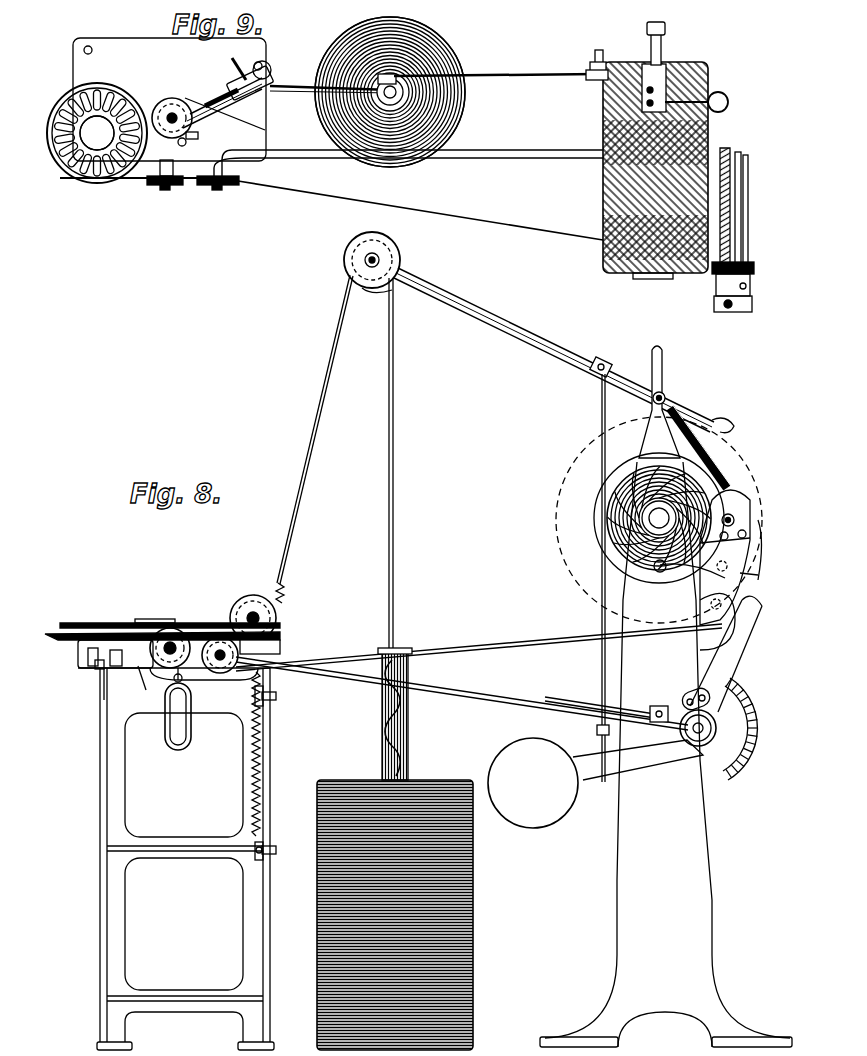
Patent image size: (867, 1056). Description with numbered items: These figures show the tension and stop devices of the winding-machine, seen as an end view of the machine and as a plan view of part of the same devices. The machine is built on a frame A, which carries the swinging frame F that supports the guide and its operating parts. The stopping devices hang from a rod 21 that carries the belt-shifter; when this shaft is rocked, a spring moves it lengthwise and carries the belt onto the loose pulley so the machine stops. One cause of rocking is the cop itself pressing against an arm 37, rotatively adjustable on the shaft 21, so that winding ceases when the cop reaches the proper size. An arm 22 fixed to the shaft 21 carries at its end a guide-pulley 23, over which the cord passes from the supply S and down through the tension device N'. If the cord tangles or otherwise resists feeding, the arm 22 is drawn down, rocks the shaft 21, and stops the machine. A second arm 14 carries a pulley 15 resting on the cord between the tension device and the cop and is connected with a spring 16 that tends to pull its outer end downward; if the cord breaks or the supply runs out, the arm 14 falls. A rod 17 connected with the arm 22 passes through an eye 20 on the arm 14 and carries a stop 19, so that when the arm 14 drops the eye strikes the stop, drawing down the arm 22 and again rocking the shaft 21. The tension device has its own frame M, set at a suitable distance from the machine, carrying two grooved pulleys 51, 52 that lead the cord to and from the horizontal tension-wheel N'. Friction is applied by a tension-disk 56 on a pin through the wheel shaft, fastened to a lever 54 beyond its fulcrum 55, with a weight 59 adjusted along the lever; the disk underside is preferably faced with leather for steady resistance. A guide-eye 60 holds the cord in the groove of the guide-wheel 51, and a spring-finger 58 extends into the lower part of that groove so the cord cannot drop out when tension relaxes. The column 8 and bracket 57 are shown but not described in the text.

In FIG. 8, the column 8 is at (410, 712).
In FIG. 9, the arm 14 is at (497, 150).
In FIG. 8, the arm 14 is at (484, 700).
In FIG. 9, the pulley 15 is at (216, 185).
In FIG. 8, the pulley 15 is at (214, 640).
In FIG. 8, the spring 16 is at (262, 738).
In FIG. 8, the rod 17 is at (600, 622).
In FIG. 8, the stop 19 is at (596, 730).
In FIG. 8, the eye 20 is at (598, 712).
In FIG. 9, the rod 21 is at (662, 56).
In FIG. 8, the rod 21 is at (668, 395).
In FIG. 9, the arm 22 is at (524, 76).
In FIG. 8, the arm 22 is at (554, 350).
In FIG. 9, the guide-pulley 23 is at (362, 78).
In FIG. 8, the guide-pulley 23 is at (396, 262).
In FIG. 9, the arm 37 is at (729, 102).
In FIG. 8, the arm 37 is at (730, 418).
In FIG. 9, the grooved pulley 51 is at (256, 92).
In FIG. 8, the grooved pulley 51 is at (240, 606).
In FIG. 9, the grooved pulley 52 is at (172, 112).
In FIG. 8, the grooved pulley 52 is at (172, 628).
In FIG. 9, the lever 54 is at (198, 136).
In FIG. 8, the lever 54 is at (146, 690).
In FIG. 8, the fulcrum 55 is at (100, 672).
In FIG. 9, the tension-disk 56 is at (97, 133).
In FIG. 8, the tension-disk 56 is at (88, 622).
In FIG. 8, the bracket 57 is at (92, 664).
In FIG. 9, the spring-finger 58 is at (238, 120).
In FIG. 8, the spring-finger 58 is at (282, 636).
In FIG. 9, the weight 59 is at (192, 149).
In FIG. 9, the guide-eye 60 is at (268, 66).
In FIG. 8, the guide-eye 60 is at (286, 590).
In FIG. 9, the tension-wheel N' is at (78, 133).
In FIG. 8, the tension-wheel N' is at (162, 617).
In FIG. 9, the supply S is at (398, 92).
In FIG. 8, the supply S is at (404, 915).
In FIG. 8, the frame M is at (185, 859).
In FIG. 8, the swinging frame F is at (726, 654).
In FIG. 8, the frame A is at (666, 754).